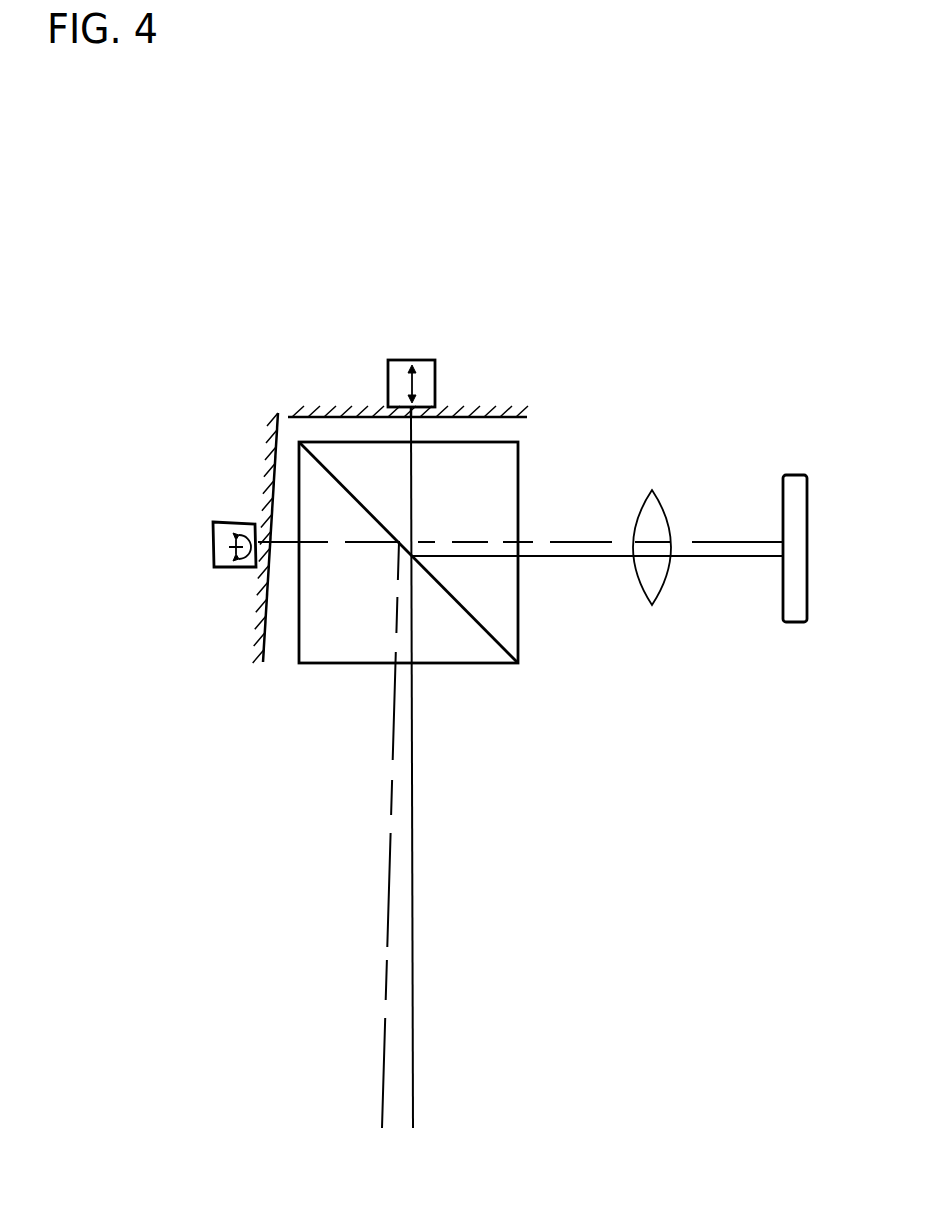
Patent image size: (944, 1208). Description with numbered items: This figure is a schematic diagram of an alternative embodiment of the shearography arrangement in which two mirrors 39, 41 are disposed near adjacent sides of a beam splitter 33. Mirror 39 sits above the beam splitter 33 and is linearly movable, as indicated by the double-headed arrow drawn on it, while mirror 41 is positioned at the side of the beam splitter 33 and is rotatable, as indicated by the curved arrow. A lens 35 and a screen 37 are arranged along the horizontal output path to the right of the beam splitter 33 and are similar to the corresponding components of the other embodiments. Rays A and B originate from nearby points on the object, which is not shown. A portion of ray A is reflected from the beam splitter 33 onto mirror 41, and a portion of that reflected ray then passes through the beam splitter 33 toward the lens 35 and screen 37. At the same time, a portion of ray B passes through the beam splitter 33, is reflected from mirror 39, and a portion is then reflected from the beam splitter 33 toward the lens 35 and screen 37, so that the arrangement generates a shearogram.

The beam splitter 33 is at (473, 653).
The lens 35 is at (648, 580).
The screen 37 is at (793, 615).
The mirror 39 is at (427, 375).
The mirror 41 is at (215, 550).
The ray A is at (702, 540).
The ray B is at (702, 557).